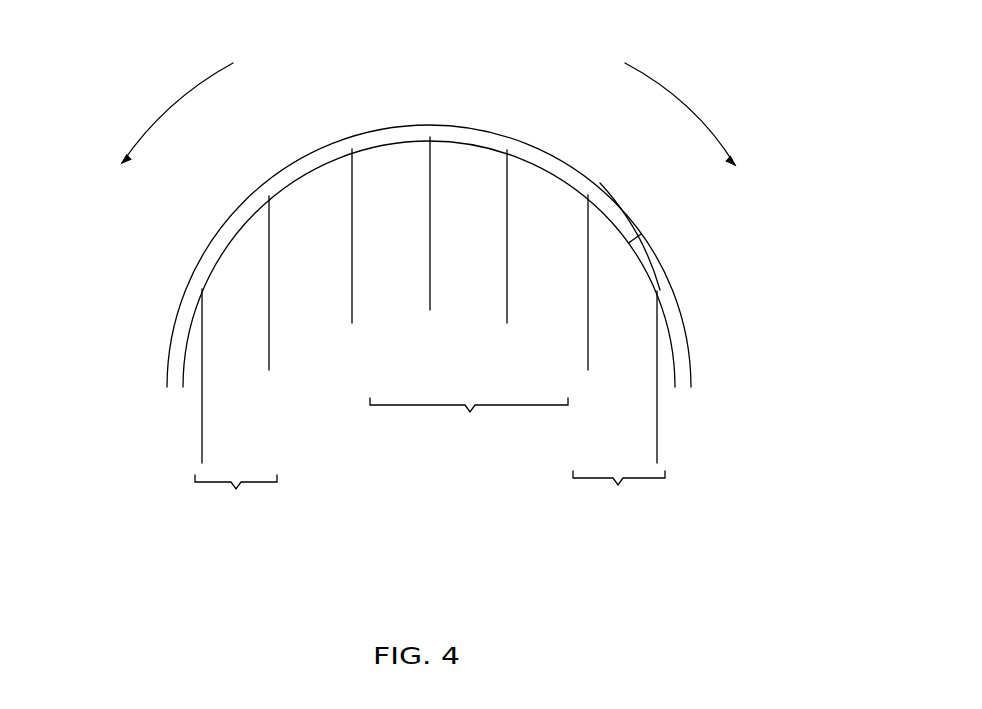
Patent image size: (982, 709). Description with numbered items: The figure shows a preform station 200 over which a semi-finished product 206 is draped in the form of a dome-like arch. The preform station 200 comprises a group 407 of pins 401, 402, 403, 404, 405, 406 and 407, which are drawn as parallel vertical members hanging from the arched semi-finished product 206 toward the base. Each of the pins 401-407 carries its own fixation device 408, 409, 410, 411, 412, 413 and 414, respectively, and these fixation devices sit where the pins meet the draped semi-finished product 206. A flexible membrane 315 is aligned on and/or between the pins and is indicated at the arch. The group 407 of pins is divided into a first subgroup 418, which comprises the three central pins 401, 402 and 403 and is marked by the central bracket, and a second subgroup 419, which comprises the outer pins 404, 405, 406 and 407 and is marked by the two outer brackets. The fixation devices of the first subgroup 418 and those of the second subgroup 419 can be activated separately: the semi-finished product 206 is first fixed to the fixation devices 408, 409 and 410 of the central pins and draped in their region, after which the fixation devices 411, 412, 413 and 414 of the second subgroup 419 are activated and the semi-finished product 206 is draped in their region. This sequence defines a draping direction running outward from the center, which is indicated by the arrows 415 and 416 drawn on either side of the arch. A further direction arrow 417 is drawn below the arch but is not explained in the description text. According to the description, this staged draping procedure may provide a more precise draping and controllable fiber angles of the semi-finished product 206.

The preform station 200 is at (715, 550).
The semi-finished product 206 is at (455, 128).
The flexible membrane 315 is at (637, 237).
The pin 401 is at (431, 280).
The pin 402 is at (353, 300).
The pin 403 is at (508, 305).
The pin 404 is at (272, 350).
The pin 405 is at (590, 345).
The pin 406 is at (205, 390).
The pin 407 is at (660, 400).
The fixation device 408 is at (430, 135).
The fixation device 409 is at (347, 142).
The fixation device 410 is at (508, 148).
The fixation device 411 is at (267, 195).
The fixation device 412 is at (600, 185).
The fixation device 413 is at (200, 290).
The fixation device 414 is at (660, 290).
The arrow 415 is at (177, 103).
The arrow 416 is at (683, 103).
The direction 417 is at (524, 531).
The first subgroup 418 is at (470, 428).
The second subgroup 419 is at (236, 498).